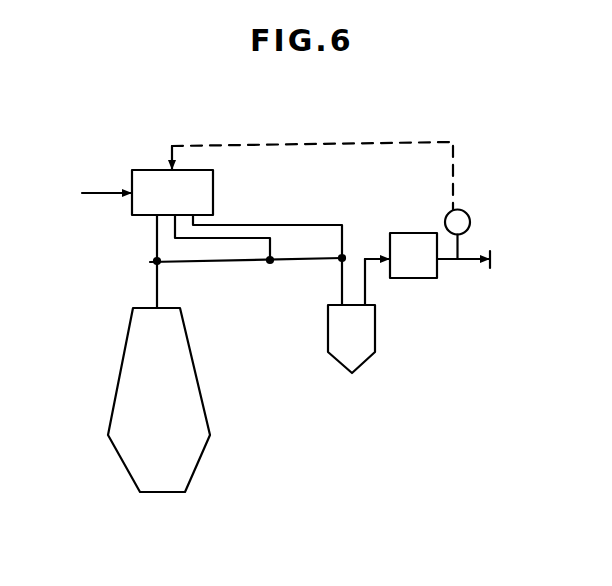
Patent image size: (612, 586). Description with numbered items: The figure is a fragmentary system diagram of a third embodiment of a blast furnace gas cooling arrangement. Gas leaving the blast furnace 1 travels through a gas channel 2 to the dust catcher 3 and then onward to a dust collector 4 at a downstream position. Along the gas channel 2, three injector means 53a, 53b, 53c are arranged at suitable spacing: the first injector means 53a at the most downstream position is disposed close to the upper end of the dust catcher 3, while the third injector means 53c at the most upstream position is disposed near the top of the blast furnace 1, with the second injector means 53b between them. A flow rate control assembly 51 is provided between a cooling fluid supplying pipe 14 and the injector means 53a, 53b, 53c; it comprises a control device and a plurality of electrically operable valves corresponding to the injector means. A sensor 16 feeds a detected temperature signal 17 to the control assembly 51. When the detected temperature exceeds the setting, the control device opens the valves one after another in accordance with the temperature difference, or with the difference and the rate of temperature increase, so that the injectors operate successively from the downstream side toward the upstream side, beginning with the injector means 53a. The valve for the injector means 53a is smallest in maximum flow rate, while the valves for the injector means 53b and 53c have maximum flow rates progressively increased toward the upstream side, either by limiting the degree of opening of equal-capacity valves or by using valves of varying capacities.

The blast furnace 1 is at (204, 457).
The gas channel 2 is at (360, 272).
The dust catcher 3 is at (343, 371).
The dust collector 4 is at (410, 279).
The cooling fluid supplying pipe 14 is at (100, 194).
The sensor 16 is at (468, 218).
The detected temperature signal 17 is at (279, 144).
The flow rate control assembly 51 is at (214, 190).
The first injector means 53a is at (344, 256).
The second injector means 53b is at (270, 264).
The third injector means 53c is at (156, 261).